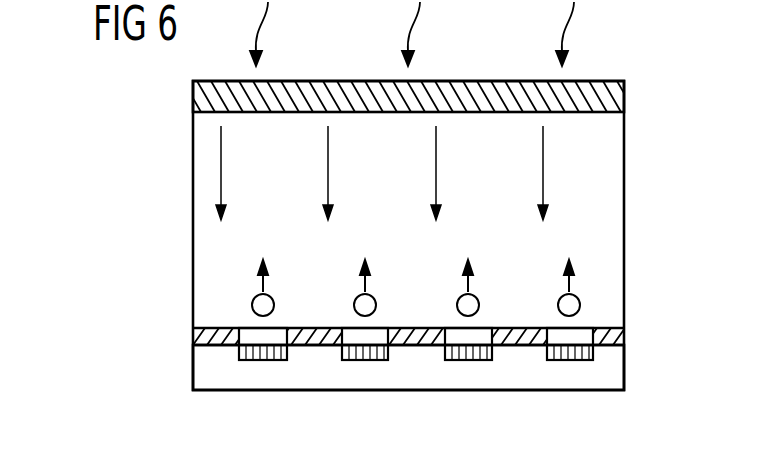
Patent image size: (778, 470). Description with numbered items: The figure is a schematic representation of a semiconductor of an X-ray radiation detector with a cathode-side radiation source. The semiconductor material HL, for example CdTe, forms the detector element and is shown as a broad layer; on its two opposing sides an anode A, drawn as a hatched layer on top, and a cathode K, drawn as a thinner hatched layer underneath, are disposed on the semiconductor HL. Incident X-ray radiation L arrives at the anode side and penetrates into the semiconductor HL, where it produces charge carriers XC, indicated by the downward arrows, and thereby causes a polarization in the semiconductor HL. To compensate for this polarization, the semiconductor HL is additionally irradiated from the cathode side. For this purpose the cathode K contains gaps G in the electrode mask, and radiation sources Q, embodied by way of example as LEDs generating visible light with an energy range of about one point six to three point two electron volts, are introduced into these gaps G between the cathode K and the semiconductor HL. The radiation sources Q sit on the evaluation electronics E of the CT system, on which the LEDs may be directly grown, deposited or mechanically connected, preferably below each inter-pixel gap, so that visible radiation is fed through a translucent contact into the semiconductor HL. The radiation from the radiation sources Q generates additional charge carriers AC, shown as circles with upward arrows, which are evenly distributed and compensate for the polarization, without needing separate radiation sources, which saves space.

The incident X-ray radiation L is at (563, 30).
The anode A is at (624, 92).
The charge carriers produced by X-ray radiation XC is at (544, 167).
The semiconductor material HL is at (624, 238).
The additional charge carriers AC is at (580, 305).
The cathode K is at (619, 341).
The evaluation electronics E is at (624, 373).
The gaps G is at (254, 336).
The radiation sources Q is at (270, 352).